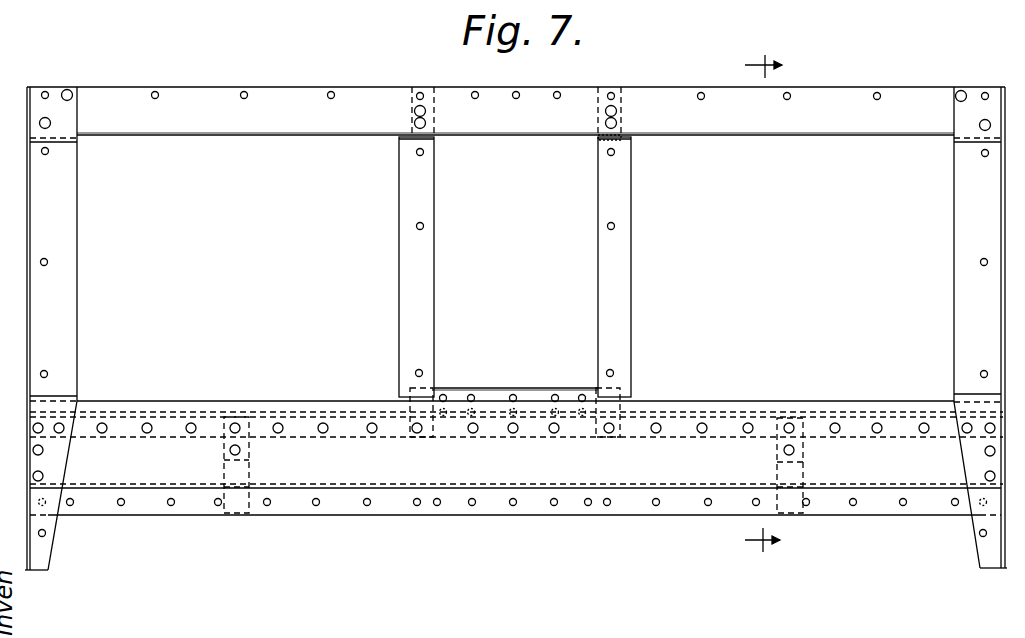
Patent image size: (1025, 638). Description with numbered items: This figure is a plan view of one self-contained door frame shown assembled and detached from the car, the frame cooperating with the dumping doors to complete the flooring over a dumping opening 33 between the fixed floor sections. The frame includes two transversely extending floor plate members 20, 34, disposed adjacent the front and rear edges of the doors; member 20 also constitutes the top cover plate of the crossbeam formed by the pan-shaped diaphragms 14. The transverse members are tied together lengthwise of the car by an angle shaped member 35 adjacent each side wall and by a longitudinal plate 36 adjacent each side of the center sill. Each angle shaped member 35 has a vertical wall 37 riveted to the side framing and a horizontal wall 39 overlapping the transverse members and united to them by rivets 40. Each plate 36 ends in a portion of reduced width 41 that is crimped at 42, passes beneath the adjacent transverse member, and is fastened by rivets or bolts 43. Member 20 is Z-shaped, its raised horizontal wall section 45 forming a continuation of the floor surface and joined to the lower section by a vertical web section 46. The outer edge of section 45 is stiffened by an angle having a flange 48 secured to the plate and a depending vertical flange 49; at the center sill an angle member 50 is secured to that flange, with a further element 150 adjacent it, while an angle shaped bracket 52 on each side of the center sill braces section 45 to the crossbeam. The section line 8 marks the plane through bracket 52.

The section line 8- 8 is at (763, 303).
The diaphragm 14 is at (593, 513).
The floor plate member 20 is at (470, 452).
The dumping opening 33 is at (250, 146).
The floor plate member 34 is at (337, 121).
The angle shaped member 35 is at (75, 195).
The longitudinal plate 36 is at (433, 211).
The vertical wall 37 is at (30, 219).
The horizontal wall 39 is at (77, 161).
The rivet 40 is at (50, 122).
The portion of reduced width 41 is at (618, 100).
The crimp 42 is at (432, 138).
The rivets or bolts 43 is at (416, 124).
The horizontal wall section 45 is at (735, 401).
The vertical web section 46 is at (637, 490).
The flange 48 is at (862, 437).
The flange 49 is at (884, 412).
The angle member 50 is at (494, 399).
The angle shaped bracket 52 is at (248, 478).
The strip edge 150 is at (456, 388).